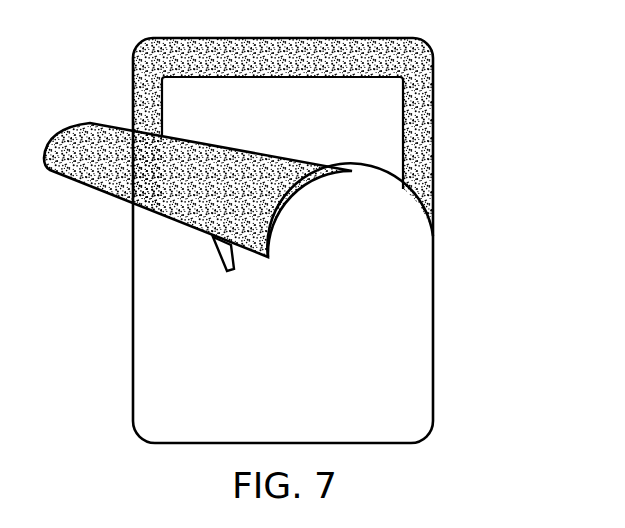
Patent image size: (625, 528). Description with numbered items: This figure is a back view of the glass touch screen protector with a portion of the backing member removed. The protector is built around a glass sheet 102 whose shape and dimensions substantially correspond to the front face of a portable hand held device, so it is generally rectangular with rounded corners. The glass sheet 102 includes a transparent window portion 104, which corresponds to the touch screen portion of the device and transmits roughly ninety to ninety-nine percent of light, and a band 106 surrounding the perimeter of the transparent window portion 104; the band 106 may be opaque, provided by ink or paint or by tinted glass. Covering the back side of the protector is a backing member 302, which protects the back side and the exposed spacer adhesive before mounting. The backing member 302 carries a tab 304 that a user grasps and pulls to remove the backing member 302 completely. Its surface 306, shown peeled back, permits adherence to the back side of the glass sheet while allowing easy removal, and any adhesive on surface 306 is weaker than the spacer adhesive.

The glass sheet 102 is at (447, 40).
The transparent window portion 104 is at (300, 132).
The band 106 is at (413, 147).
The backing member 302 is at (297, 394).
The tab 304 is at (222, 253).
The surface 306 is at (92, 133).